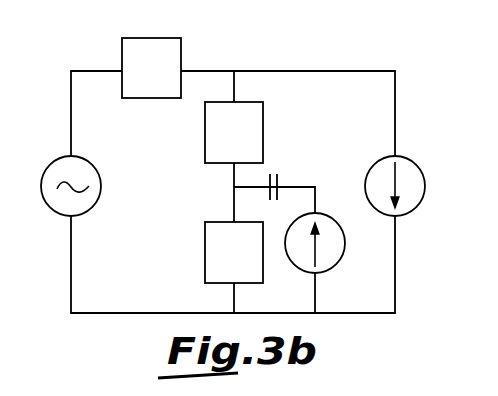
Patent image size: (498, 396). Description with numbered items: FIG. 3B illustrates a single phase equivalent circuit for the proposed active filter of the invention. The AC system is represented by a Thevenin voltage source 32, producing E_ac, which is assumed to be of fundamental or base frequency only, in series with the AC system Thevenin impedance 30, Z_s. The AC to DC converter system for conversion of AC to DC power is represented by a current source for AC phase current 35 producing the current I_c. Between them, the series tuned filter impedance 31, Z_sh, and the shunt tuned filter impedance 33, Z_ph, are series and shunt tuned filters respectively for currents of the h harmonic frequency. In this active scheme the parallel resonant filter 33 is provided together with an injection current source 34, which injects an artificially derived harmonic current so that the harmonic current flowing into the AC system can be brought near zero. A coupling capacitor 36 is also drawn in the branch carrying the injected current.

The AC system Thevenin impedance 30 is at (181, 47).
The series tuned filter impedance 31 is at (263, 128).
The Thevenin voltage source 32 is at (92, 210).
The shunt tuned filter impedance 33 is at (205, 262).
The injection current source 34 is at (298, 268).
The current source for AC phase current 35 is at (408, 152).
The coupling capacitor Cch 36 is at (280, 180).